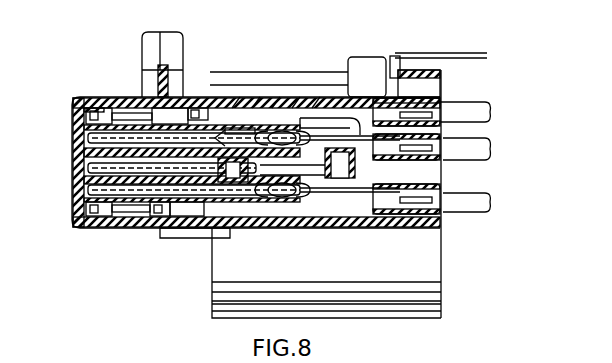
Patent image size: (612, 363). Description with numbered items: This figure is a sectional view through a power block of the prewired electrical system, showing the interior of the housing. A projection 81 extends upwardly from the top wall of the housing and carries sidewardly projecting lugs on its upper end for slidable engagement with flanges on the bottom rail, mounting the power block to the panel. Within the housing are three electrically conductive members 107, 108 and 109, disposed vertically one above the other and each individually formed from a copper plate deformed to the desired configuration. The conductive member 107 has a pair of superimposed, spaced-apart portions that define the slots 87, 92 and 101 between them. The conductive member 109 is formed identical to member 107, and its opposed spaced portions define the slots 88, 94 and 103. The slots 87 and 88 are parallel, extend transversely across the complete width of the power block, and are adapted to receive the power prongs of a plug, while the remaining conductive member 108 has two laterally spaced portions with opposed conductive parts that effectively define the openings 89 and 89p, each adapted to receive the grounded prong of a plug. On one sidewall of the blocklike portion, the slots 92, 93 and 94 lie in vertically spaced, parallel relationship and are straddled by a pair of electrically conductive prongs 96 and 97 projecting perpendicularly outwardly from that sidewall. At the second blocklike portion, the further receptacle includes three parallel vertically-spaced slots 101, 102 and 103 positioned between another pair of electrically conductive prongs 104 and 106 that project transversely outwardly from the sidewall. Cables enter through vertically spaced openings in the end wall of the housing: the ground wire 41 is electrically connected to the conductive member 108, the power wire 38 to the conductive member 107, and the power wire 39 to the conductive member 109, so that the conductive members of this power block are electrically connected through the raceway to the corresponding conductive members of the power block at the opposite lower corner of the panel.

The projection 81 is at (160, 48).
The electrically conductive prong 104 is at (93, 110).
The elongated slot 92 is at (136, 110).
The prong 96 is at (190, 108).
The slot 101 is at (80, 140).
The slot 102 is at (80, 168).
The slot 103 is at (82, 196).
The electrically conductive member 107 is at (230, 128).
The parallel slot 87 is at (278, 130).
The electrically conductive member 108 is at (310, 118).
The electrically conductive member 109 is at (236, 212).
The opening 89p is at (252, 205).
The parallel slot 88 is at (290, 205).
The opening 89 is at (356, 216).
The ground wire 41 is at (482, 106).
The power wire 38 is at (490, 146).
The power wire 39 is at (482, 204).
The electrically conductive prong 106 is at (94, 222).
The elongated slot 93 is at (148, 218).
The elongated slot 94 is at (162, 220).
The prong 97 is at (190, 226).